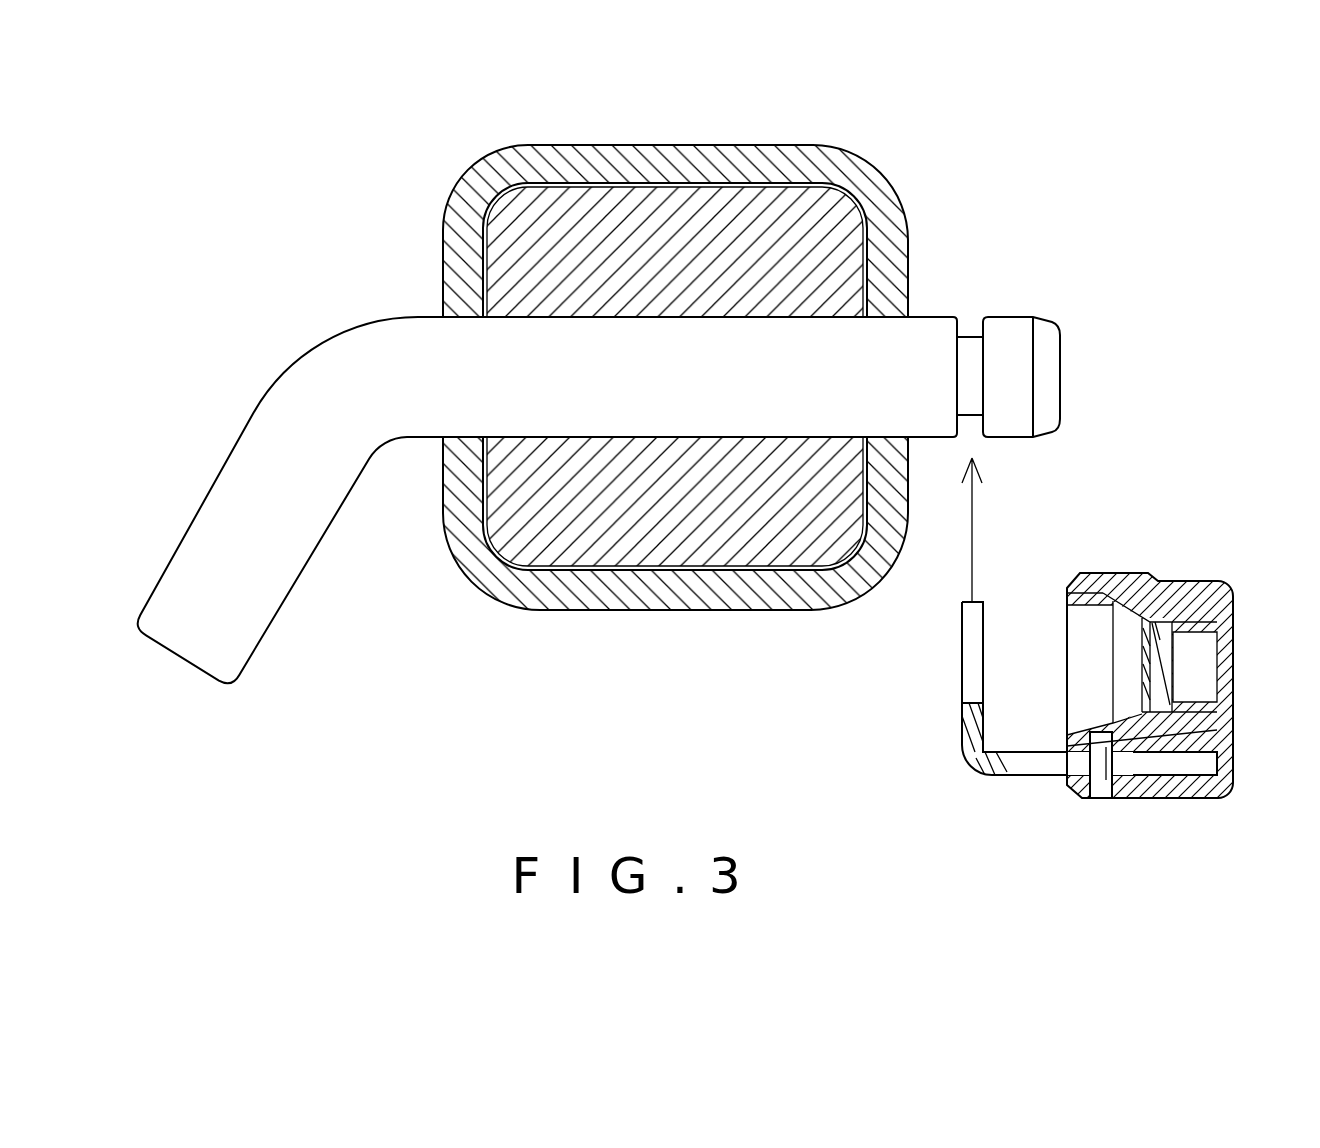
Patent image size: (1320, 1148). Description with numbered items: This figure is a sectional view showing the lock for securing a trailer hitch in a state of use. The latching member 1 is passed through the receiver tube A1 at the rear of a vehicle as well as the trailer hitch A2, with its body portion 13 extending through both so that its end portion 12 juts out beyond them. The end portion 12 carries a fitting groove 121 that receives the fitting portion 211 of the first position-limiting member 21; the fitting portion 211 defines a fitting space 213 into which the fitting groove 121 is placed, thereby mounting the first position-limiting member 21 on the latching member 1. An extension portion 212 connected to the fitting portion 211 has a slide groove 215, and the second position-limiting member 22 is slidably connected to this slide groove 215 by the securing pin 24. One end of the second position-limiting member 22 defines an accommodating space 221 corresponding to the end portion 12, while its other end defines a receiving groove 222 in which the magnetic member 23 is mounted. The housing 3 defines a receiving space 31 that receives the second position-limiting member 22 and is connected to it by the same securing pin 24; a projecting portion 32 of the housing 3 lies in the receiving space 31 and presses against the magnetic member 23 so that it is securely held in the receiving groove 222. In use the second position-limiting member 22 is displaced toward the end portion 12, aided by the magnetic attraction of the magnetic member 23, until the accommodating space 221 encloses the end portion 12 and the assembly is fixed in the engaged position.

The latching member 1 is at (599, 463).
The body portion 13 is at (428, 330).
The end portion 12 is at (1006, 338).
The fitting groove 121 is at (973, 330).
The receiver tube A1 is at (683, 162).
The trailer hitch A2 is at (631, 212).
The first position-limiting member 21 is at (966, 723).
The fitting portion 211 is at (972, 723).
The extension portion 212 is at (1000, 770).
The fitting space 213 is at (968, 675).
The slide groove 215 is at (1035, 772).
The second position-limiting member 22 is at (1145, 622).
The accommodating space 221 is at (1093, 620).
The receiving groove 222 is at (1175, 600).
The magnetic member 23 is at (1163, 673).
The securing pin 24 is at (1100, 797).
The housing 3 is at (1179, 692).
The receiving space 31 is at (1150, 753).
The projecting portion 32 is at (1218, 582).